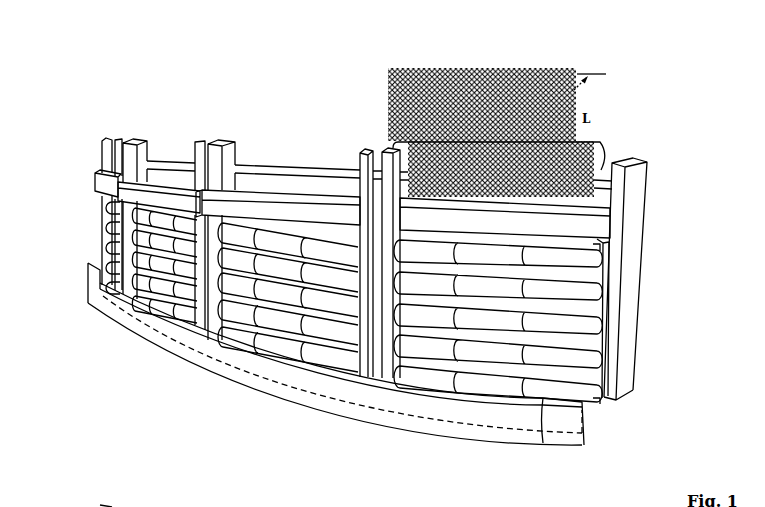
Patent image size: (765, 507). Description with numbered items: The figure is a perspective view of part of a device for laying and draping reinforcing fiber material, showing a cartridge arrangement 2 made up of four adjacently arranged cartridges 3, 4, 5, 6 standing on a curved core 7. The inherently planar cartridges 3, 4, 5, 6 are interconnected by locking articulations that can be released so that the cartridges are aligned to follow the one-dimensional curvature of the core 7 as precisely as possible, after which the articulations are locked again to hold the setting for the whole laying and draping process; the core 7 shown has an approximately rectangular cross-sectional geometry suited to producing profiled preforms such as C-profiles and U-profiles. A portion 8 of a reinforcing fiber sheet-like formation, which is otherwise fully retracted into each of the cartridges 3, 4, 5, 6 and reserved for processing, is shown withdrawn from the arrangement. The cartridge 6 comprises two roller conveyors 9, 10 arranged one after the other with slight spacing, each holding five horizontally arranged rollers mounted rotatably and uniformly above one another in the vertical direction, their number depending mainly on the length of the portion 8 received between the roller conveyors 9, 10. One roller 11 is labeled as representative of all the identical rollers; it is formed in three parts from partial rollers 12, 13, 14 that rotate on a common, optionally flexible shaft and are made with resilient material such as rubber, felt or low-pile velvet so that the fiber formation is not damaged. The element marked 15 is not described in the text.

The cartridge arrangement 2 is at (87, 197).
The cartridge 3 is at (132, 136).
The cartridge 4 is at (203, 141).
The cartridge 5 is at (372, 143).
The cartridge 6 is at (505, 70).
The core 7 is at (586, 414).
The portion of a reinforcing fiber sheet-like formation 8 is at (389, 69).
The roller conveyor 9 is at (597, 247).
The roller conveyor 10 is at (600, 286).
The roller 11 is at (597, 404).
The partial roller 12 is at (558, 392).
The partial roller 13 is at (478, 383).
The partial roller 14 is at (418, 375).
The floor 15 is at (108, 506).